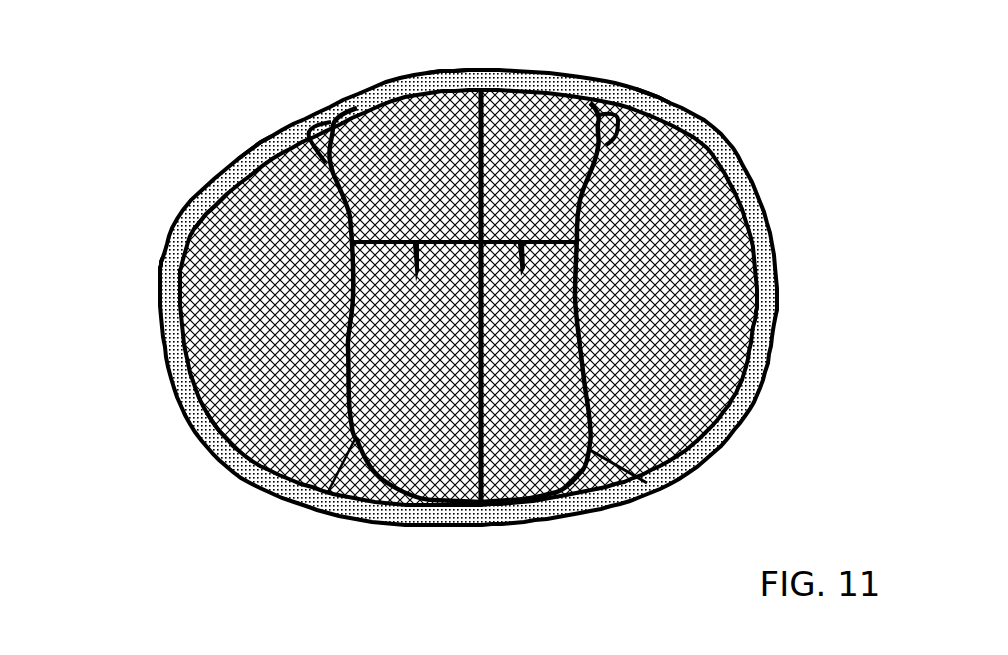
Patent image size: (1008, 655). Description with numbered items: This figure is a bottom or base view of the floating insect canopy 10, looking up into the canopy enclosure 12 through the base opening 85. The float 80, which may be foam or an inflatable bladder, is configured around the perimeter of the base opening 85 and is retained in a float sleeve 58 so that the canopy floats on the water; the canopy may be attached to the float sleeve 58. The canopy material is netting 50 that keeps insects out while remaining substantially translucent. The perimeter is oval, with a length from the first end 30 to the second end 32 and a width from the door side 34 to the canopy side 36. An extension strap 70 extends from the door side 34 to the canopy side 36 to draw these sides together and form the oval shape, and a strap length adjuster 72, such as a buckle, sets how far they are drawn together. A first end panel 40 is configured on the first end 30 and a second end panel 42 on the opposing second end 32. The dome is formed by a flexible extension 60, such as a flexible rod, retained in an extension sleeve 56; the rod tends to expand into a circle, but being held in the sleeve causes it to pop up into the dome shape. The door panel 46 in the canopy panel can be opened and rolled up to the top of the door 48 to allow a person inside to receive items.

The floating insect canopy 10 is at (147, 183).
The canopy enclosure 12 is at (677, 177).
The first end 30 is at (763, 277).
The second end 32 is at (175, 350).
The door side 34 is at (451, 90).
The canopy side 36 is at (475, 503).
The first end panel 40 is at (713, 230).
The second end panel 42 is at (230, 283).
The door panel 46 is at (400, 145).
The door 48 is at (505, 240).
The netting 50 is at (253, 420).
The extension sleeve 56 is at (342, 150).
The float sleeve 58 is at (653, 118).
The flexible extension 60 is at (250, 148).
The extension strap 70 is at (483, 410).
The strap length adjuster 72 is at (483, 480).
The float 80 is at (617, 103).
The base opening 85 is at (572, 410).